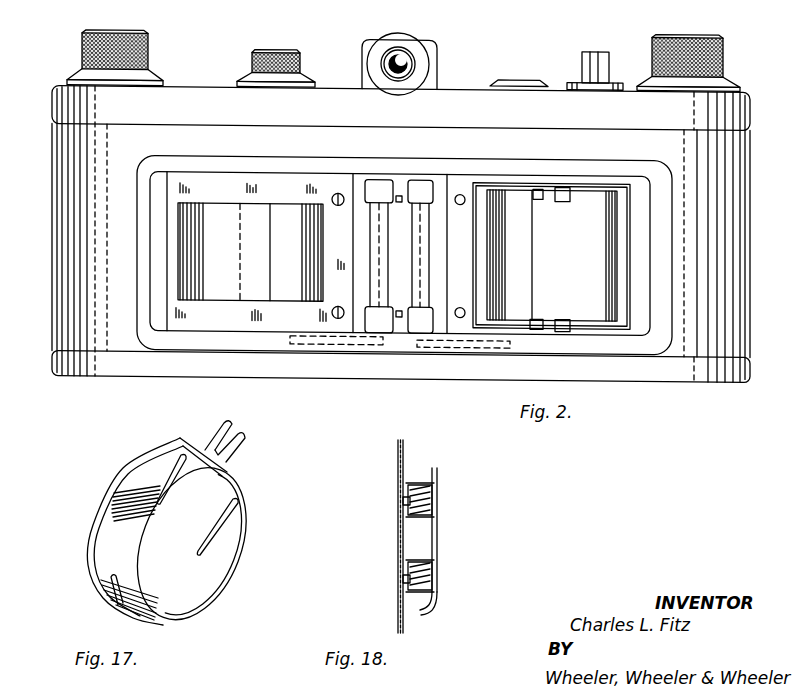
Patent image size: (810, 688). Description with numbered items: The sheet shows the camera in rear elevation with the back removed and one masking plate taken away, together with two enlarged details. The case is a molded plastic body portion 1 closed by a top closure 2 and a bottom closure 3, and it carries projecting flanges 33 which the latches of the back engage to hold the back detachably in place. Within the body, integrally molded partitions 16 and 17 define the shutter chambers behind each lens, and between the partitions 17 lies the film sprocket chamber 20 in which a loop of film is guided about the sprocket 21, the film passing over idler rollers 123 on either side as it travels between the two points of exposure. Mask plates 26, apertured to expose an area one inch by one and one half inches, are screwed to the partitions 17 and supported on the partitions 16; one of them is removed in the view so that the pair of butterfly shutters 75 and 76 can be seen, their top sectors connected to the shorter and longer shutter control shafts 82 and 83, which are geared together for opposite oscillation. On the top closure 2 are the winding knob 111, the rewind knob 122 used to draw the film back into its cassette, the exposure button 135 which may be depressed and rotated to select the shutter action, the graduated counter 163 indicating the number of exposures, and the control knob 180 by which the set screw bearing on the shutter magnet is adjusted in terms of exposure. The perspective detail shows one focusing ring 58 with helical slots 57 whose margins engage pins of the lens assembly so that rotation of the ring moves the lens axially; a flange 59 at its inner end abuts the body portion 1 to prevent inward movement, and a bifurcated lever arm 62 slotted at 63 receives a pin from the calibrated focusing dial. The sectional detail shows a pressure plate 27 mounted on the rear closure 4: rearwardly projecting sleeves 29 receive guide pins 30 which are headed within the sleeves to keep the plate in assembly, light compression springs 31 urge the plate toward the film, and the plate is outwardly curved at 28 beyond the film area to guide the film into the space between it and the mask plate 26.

In FIG. 2, the body portion 1 is at (80, 221).
In FIG. 2, the top closure 2 is at (68, 101).
In FIG. 2, the bottom closure 3 is at (75, 359).
In FIG. 2, the partition 16 is at (638, 189).
In FIG. 2, the partition 17 is at (458, 184).
In FIG. 2, the film sprocket chamber 20 is at (440, 318).
In FIG. 2, the sprocket 21 is at (398, 178).
In FIG. 2, the mask plate 26 is at (250, 188).
In FIG. 2, the projecting flange 33 is at (140, 246).
In FIG. 2, the shutter 75 is at (404, 223).
In FIG. 2, the shutter 76 is at (404, 282).
In FIG. 2, the shutter control shaft 82 is at (535, 192).
In FIG. 2, the shutter control shaft 83 is at (560, 195).
In FIG. 2, the knob 111 is at (722, 53).
In FIG. 2, the knob 122 is at (80, 36).
In FIG. 2, the idler roller 123 is at (425, 311).
In FIG. 2, the exposure button 135 is at (588, 66).
In FIG. 2, the counter 163 is at (512, 76).
In FIG. 2, the control knob 180 is at (262, 55).
In FIG. 17, the helical slot 57 is at (168, 472).
In FIG. 17, the focusing ring 58 is at (207, 588).
In FIG. 17, the flange 59 is at (95, 533).
In FIG. 17, the bifurcated lever arm 62 is at (214, 434).
In FIG. 17, the slot 63 is at (242, 443).
In FIG. 18, the rear closure 4 is at (398, 553).
In FIG. 18, the pressure plate 27 is at (436, 552).
In FIG. 18, the outwardly curved portion 28 is at (432, 602).
In FIG. 18, the sleeve 29 is at (430, 500).
In FIG. 18, the guide pin 30 is at (403, 503).
In FIG. 18, the compression spring 31 is at (437, 483).